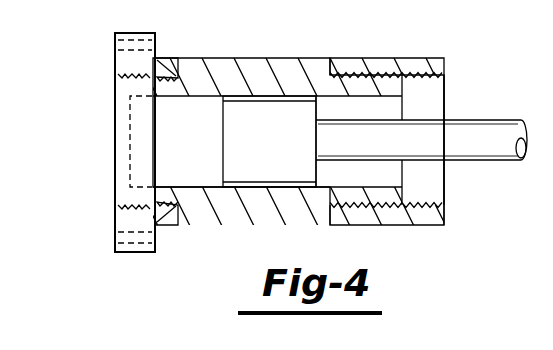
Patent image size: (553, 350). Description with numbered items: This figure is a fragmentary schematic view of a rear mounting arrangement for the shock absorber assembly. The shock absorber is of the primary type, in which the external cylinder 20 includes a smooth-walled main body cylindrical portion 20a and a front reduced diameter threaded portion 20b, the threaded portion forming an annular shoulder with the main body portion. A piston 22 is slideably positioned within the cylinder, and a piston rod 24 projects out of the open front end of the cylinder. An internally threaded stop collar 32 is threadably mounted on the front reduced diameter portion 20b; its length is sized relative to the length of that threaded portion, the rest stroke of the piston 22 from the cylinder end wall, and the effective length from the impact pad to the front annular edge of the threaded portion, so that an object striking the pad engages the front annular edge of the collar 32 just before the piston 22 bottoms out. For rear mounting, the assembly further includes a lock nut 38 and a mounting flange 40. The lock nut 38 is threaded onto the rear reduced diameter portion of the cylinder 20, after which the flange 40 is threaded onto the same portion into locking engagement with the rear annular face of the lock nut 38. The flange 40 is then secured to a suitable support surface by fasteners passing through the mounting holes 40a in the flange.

The external cylinder 20 is at (270, 33).
The main body cylindrical portion 20a is at (297, 58).
The front reduced diameter threaded portion 20b is at (368, 73).
The piston 22 is at (280, 151).
The piston rod 24 is at (521, 83).
The stop collar 32 is at (433, 23).
The lock nut 38 is at (157, 72).
The mounting flange 40 is at (115, 62).
The mounting holes 40a is at (158, 240).